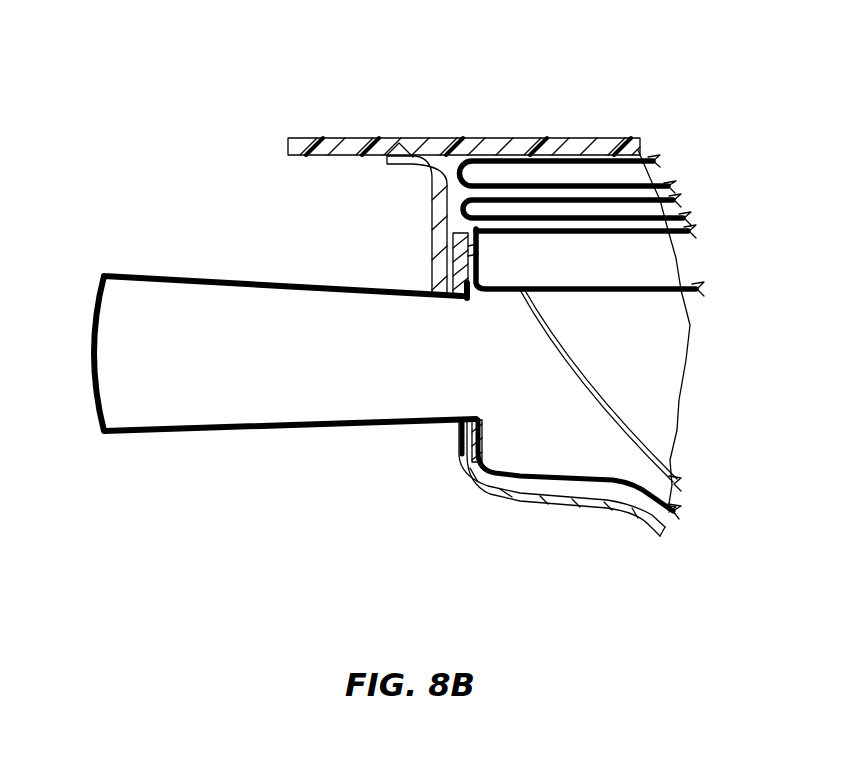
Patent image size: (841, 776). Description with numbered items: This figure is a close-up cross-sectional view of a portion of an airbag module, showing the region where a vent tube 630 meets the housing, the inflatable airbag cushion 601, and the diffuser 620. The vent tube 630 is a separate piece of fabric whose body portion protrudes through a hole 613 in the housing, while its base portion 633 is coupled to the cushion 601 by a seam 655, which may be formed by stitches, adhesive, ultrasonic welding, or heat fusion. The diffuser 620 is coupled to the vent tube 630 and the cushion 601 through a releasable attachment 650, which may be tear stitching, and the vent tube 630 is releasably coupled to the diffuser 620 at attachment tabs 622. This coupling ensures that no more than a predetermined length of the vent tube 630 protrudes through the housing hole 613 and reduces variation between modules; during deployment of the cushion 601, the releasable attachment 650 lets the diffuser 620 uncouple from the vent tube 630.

The inflatable airbag cushion 601 is at (490, 220).
The holes in housing 613 is at (457, 437).
The diffuser 620 is at (643, 350).
The attachment tabs 622 is at (480, 287).
The vent tube 630 is at (207, 272).
The base portion 633 is at (473, 482).
The releasable attachment 650 is at (440, 283).
The seam 655 is at (450, 233).